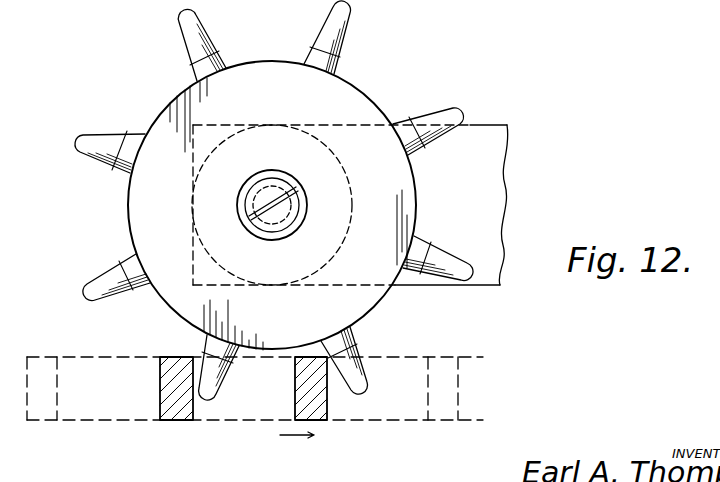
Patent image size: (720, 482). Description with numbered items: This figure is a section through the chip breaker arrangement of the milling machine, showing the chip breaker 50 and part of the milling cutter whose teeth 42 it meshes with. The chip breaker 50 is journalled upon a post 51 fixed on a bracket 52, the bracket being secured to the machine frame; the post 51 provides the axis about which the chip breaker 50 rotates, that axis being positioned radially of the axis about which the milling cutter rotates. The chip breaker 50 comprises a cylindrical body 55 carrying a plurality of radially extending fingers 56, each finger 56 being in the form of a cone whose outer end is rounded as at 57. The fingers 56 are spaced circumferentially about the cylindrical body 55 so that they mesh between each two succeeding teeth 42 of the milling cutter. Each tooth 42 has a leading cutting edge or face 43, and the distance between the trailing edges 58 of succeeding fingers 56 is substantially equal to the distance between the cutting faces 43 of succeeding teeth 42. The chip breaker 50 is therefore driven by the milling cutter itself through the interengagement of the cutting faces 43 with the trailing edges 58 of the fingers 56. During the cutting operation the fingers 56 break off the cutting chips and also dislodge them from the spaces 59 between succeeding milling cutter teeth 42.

The teeth 42 is at (175, 421).
The cutting edge or face 43 is at (193, 420).
The chip breaker 50 is at (367, 298).
The post 51 is at (300, 217).
The bracket 52 is at (498, 180).
The cylindrical body 55 is at (367, 90).
The fingers 56 is at (197, 35).
The rounded outer end 57 is at (463, 108).
The trailing edges 58 is at (443, 140).
The spaces 59 is at (258, 414).